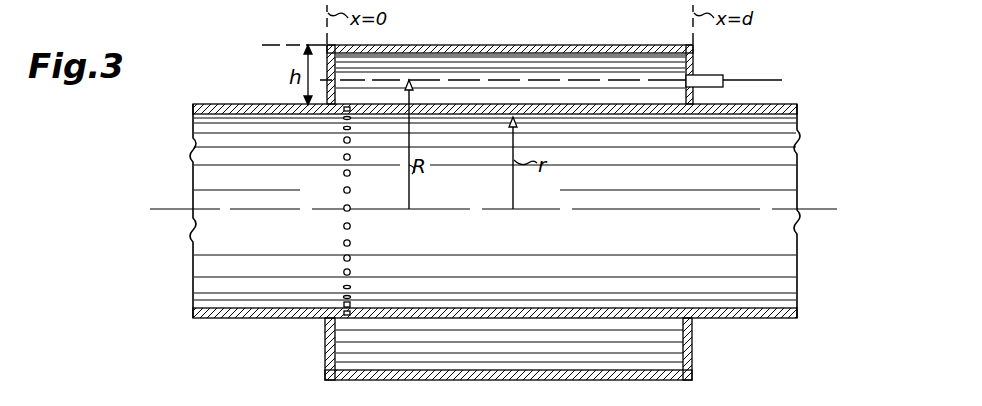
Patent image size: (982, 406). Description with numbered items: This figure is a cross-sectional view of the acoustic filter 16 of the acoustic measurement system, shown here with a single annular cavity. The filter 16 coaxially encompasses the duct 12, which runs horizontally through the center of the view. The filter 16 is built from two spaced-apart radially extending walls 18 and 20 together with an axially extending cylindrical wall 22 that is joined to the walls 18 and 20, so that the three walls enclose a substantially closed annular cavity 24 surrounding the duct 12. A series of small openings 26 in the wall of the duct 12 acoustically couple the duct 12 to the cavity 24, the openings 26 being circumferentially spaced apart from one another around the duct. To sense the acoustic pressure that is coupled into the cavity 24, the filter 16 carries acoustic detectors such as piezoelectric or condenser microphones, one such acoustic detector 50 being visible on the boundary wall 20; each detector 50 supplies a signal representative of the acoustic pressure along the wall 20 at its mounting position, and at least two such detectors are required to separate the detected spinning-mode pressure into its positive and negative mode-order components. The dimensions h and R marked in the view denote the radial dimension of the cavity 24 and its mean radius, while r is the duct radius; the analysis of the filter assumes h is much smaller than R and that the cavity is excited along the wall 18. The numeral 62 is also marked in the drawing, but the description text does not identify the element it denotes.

The duct 12 is at (776, 178).
The acoustic filter 16 is at (434, 46).
The radially extending wall 18 is at (336, 88).
The radially extending wall 20 is at (684, 68).
The axially extending cylindrical wall 22 is at (500, 45).
The annular cavity 24 is at (568, 79).
The small openings 26 is at (344, 173).
The acoustic detector 50 is at (712, 75).
The support 62 is at (251, 405).